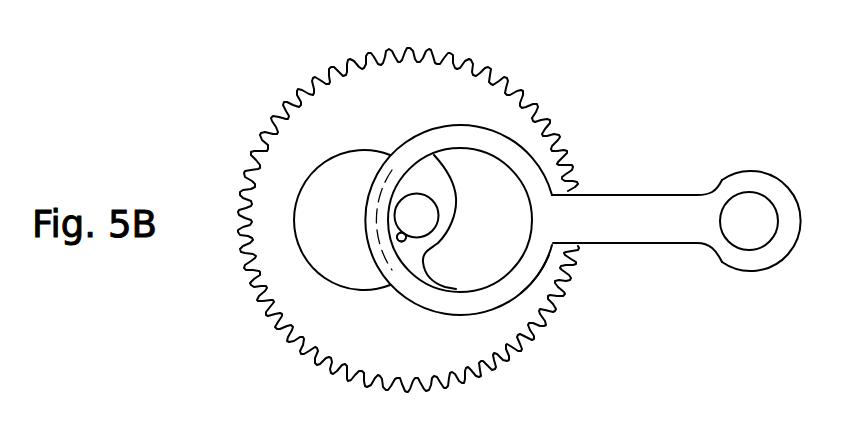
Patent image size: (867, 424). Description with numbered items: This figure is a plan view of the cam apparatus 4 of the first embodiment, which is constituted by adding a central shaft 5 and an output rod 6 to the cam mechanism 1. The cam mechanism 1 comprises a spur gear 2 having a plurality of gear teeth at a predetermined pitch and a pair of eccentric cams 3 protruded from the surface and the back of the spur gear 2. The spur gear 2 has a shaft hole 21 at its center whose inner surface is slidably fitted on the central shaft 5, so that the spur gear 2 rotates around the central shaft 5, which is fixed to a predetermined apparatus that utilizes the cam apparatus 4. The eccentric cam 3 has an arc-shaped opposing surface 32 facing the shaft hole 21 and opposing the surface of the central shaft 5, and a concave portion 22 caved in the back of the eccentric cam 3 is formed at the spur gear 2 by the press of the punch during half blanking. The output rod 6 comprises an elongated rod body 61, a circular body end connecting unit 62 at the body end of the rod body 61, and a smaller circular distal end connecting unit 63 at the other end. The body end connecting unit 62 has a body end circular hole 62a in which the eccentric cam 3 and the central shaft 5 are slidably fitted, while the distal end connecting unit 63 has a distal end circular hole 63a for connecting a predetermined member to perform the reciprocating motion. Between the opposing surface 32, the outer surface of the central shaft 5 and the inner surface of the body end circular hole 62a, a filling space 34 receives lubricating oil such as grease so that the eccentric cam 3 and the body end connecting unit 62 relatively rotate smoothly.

The cam mechanism 1 is at (570, 345).
The spur gear 2 is at (475, 347).
The eccentric cam 3 is at (498, 255).
The cam apparatus 4 is at (540, 51).
The central shaft 5 is at (422, 212).
The output rod 6 is at (661, 207).
The shaft hole 21 is at (400, 243).
The concave portion 22 is at (347, 232).
The opposing surface 32 is at (404, 242).
The filling space 34 is at (420, 173).
The rod body 61 is at (629, 210).
The body end connecting unit 62 is at (530, 176).
The body end circular hole 62a is at (568, 279).
The distal end connecting unit 63 is at (729, 226).
The distal end circular hole 63a is at (748, 242).